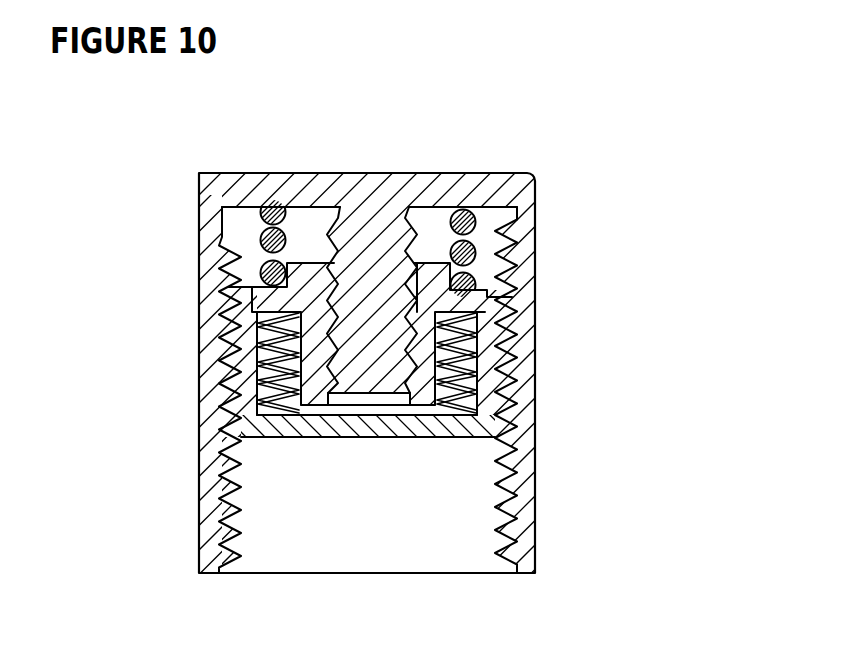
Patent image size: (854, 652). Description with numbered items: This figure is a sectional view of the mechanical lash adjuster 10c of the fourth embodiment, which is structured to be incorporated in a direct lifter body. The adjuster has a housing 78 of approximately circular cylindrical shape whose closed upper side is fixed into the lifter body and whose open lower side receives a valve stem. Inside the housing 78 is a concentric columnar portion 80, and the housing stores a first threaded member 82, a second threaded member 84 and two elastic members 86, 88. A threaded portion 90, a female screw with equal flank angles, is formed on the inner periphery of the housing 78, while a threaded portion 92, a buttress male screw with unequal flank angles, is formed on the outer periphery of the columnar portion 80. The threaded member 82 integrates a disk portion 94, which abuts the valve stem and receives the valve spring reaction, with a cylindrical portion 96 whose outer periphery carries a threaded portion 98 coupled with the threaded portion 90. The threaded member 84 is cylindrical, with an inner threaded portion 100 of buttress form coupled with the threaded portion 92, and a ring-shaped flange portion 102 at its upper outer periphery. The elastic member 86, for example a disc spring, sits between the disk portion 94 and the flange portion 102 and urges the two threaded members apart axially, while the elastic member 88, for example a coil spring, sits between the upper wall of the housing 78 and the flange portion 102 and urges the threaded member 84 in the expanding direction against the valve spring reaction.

The mechanical lash adjuster 10c is at (427, 365).
The housing 78 is at (552, 477).
The columnar portion 80 is at (376, 246).
The threaded member 82 is at (426, 453).
The threaded member 84 is at (442, 254).
The elastic member 86 is at (480, 380).
The elastic member 88 is at (262, 235).
The threaded portion 90 is at (500, 532).
The threaded portion 92 is at (326, 254).
The disk portion 94 is at (300, 437).
The cylindrical portion 96 is at (243, 337).
The threaded portion 98 is at (220, 386).
The threaded portion 100 is at (405, 363).
The flange portion 102 is at (487, 300).